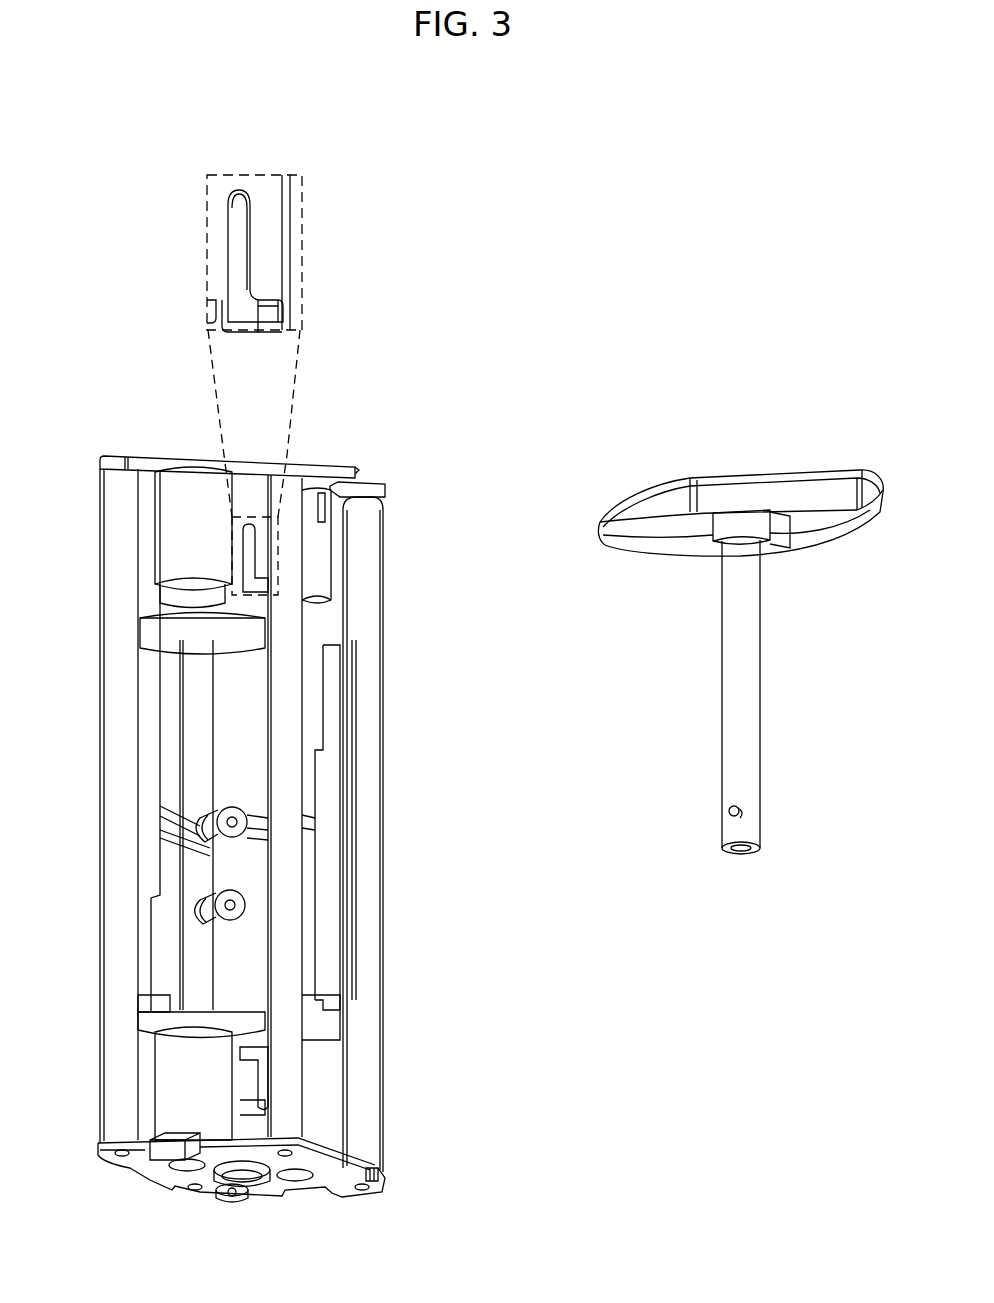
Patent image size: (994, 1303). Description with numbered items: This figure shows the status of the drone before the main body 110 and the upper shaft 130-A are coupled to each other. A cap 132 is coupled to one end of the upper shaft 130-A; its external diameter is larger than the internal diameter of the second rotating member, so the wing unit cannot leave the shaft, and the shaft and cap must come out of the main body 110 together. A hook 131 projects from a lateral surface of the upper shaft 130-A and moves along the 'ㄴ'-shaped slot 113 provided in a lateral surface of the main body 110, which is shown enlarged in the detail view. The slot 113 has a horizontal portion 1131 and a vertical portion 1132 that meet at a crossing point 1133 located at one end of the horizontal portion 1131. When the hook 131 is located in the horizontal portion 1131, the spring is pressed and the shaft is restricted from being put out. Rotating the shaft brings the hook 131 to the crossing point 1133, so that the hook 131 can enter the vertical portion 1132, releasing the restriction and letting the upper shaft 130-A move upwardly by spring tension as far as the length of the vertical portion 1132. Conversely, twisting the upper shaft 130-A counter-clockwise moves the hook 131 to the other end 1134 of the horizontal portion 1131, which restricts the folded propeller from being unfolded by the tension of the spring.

The main body 110 is at (88, 409).
The slot 113 is at (248, 557).
The horizontal portion 1131 is at (256, 325).
The vertical portion 1132 is at (242, 243).
The crossing point 1133 is at (232, 315).
The one end of the horizontal portion 1134 is at (248, 313).
The upper shaft 130-A is at (604, 408).
The hook 131 is at (730, 812).
The cap 132 is at (722, 523).